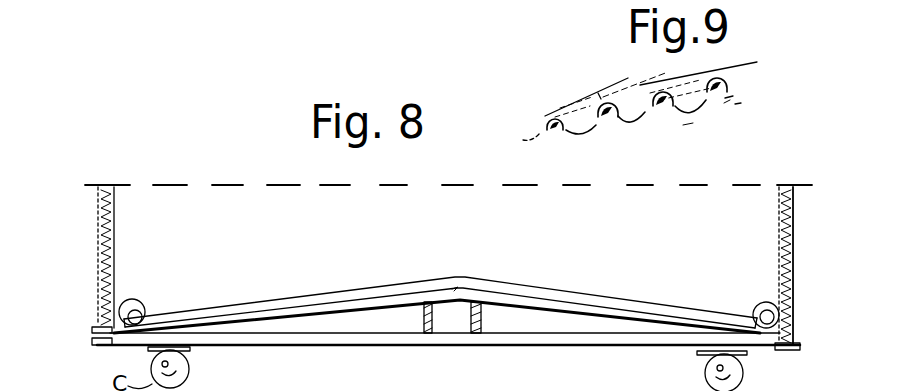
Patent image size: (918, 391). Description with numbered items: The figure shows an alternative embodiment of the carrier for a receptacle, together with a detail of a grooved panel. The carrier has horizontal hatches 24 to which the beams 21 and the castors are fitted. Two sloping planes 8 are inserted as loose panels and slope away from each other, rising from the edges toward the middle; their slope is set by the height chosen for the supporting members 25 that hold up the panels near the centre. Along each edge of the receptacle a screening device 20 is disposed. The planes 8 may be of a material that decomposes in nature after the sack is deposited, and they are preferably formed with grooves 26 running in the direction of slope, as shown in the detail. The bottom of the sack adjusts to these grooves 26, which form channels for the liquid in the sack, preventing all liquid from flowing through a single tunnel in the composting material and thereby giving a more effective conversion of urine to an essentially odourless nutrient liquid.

In FIG. 8, the sloping plane 8 is at (305, 298).
In FIG. 9, the sloping plane 8 is at (728, 98).
In FIG. 8, the screening device 20 is at (115, 318).
In FIG. 8, the beam 21 is at (152, 347).
In FIG. 8, the horizontal hatch 24 is at (320, 345).
In FIG. 8, the supporting member 25 is at (428, 315).
In FIG. 9, the groove 26 is at (590, 78).